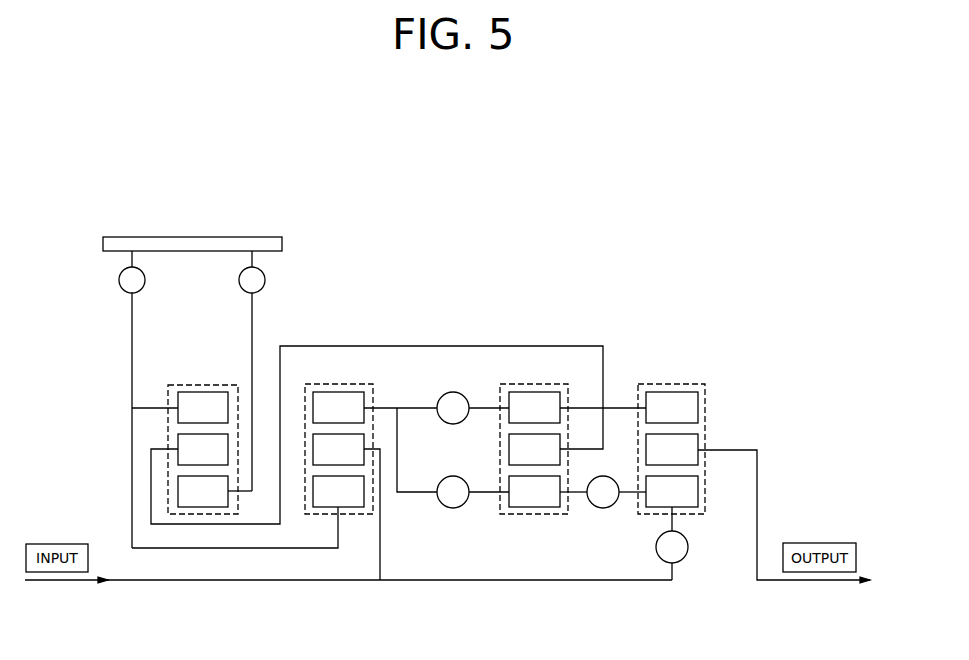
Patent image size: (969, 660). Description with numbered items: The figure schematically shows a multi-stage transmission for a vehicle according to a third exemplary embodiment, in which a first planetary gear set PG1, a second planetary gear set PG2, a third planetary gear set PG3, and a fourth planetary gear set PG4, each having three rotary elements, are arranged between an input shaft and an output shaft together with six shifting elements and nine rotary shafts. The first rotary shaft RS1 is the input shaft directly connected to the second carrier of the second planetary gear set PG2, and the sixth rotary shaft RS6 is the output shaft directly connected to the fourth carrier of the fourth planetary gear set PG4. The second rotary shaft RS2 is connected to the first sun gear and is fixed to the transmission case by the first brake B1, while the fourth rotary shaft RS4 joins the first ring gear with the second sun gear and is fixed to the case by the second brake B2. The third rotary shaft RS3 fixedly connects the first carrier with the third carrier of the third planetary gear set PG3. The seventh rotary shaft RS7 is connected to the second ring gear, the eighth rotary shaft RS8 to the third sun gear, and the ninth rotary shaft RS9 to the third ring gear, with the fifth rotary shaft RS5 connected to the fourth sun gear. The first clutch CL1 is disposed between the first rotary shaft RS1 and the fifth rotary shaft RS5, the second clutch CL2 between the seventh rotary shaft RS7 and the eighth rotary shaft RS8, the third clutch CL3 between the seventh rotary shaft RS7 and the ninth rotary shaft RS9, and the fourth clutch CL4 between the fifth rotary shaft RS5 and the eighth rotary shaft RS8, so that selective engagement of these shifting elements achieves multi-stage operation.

The first rotary shaft RS1 is at (420, 580).
The second rotary shaft RS2 is at (243, 491).
The third rotary shaft RS3 is at (168, 524).
The fourth rotary shaft RS4 is at (323, 548).
The fifth rotary shaft RS5 is at (675, 523).
The sixth rotary shaft RS6 is at (738, 450).
The seventh rotary shaft RS7 is at (385, 408).
The eighth rotary shaft RS8 is at (577, 492).
The ninth rotary shaft RS9 is at (481, 408).
The first planetary gear set PG1 is at (203, 440).
The second planetary gear set PG2 is at (339, 440).
The third planetary gear set PG3 is at (534, 440).
The fourth planetary gear set PG4 is at (671, 440).
The first brake B1 is at (252, 272).
The second brake B2 is at (132, 272).
The first clutch CL1 is at (672, 547).
The second clutch CL2 is at (453, 492).
The third clutch CL3 is at (453, 408).
The fourth clutch CL4 is at (603, 492).